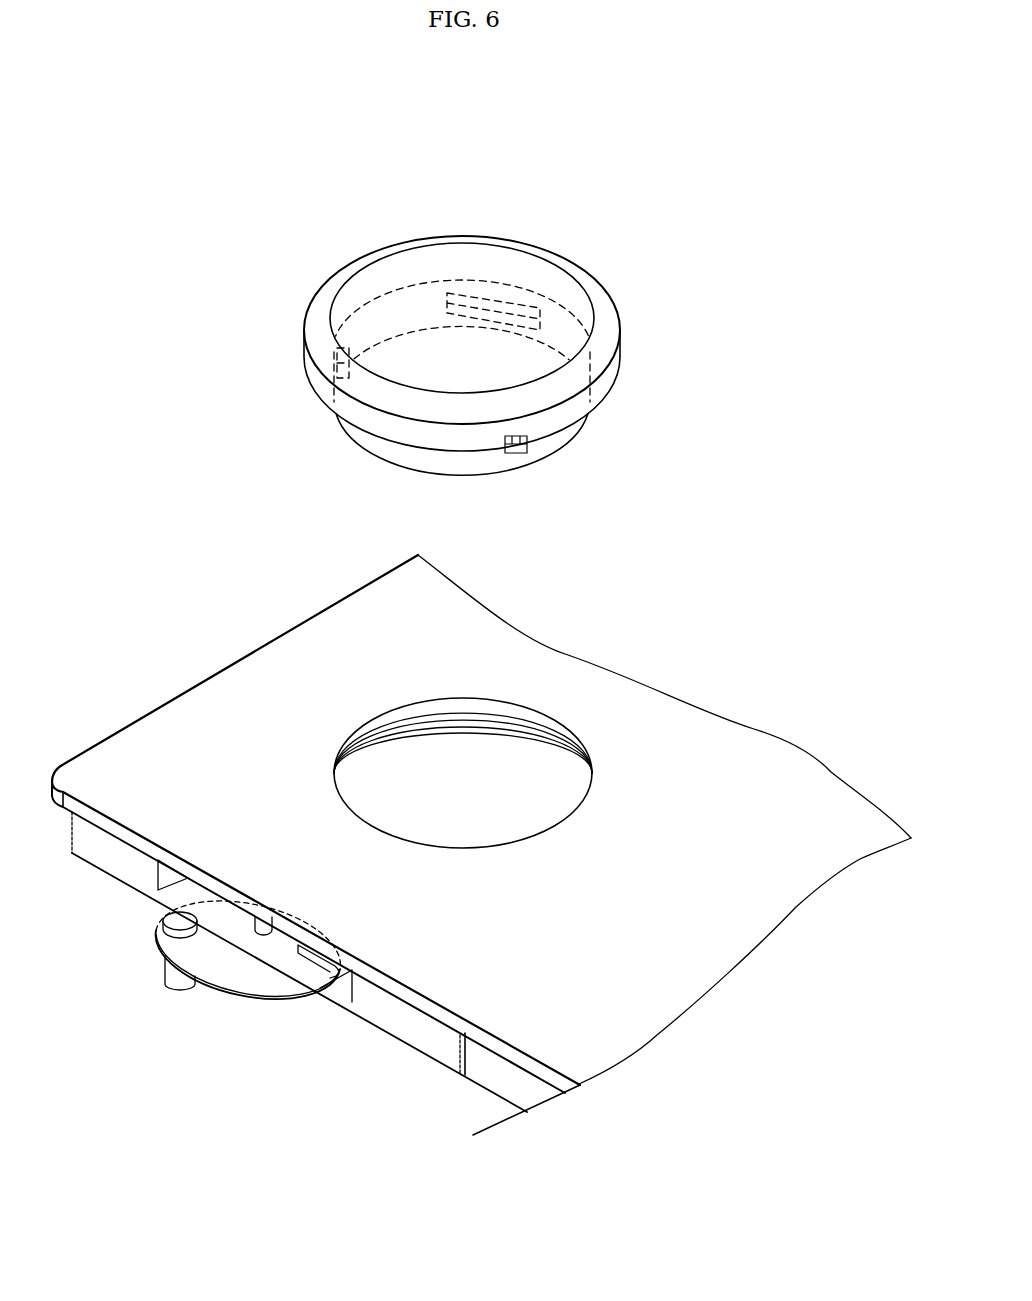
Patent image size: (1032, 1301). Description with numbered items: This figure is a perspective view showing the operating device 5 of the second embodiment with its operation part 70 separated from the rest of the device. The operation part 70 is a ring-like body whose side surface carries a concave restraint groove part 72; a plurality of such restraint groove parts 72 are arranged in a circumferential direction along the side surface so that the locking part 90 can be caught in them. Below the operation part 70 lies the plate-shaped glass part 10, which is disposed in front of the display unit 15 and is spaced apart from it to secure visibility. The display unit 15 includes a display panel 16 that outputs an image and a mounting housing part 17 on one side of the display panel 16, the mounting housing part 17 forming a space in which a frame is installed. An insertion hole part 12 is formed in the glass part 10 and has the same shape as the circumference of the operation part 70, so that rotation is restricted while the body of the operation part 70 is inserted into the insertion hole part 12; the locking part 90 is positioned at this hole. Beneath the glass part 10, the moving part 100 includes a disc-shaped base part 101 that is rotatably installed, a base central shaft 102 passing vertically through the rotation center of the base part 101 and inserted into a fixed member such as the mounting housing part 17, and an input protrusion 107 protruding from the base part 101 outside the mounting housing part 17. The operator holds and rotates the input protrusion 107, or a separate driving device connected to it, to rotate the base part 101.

The operating device 5 is at (456, 301).
The operation part 70 is at (584, 230).
The restraint groove part 72 is at (527, 438).
The glass part 10 is at (481, 857).
The insertion hole part 12 is at (493, 699).
The locking part 90 is at (510, 742).
The moving part 100 is at (191, 969).
The base part 101 is at (237, 977).
The base central shaft 102 is at (258, 921).
The input protrusion 107 is at (174, 983).
The display unit 15 is at (299, 987).
The display panel 16 is at (512, 1085).
The mounting housing part 17 is at (311, 978).